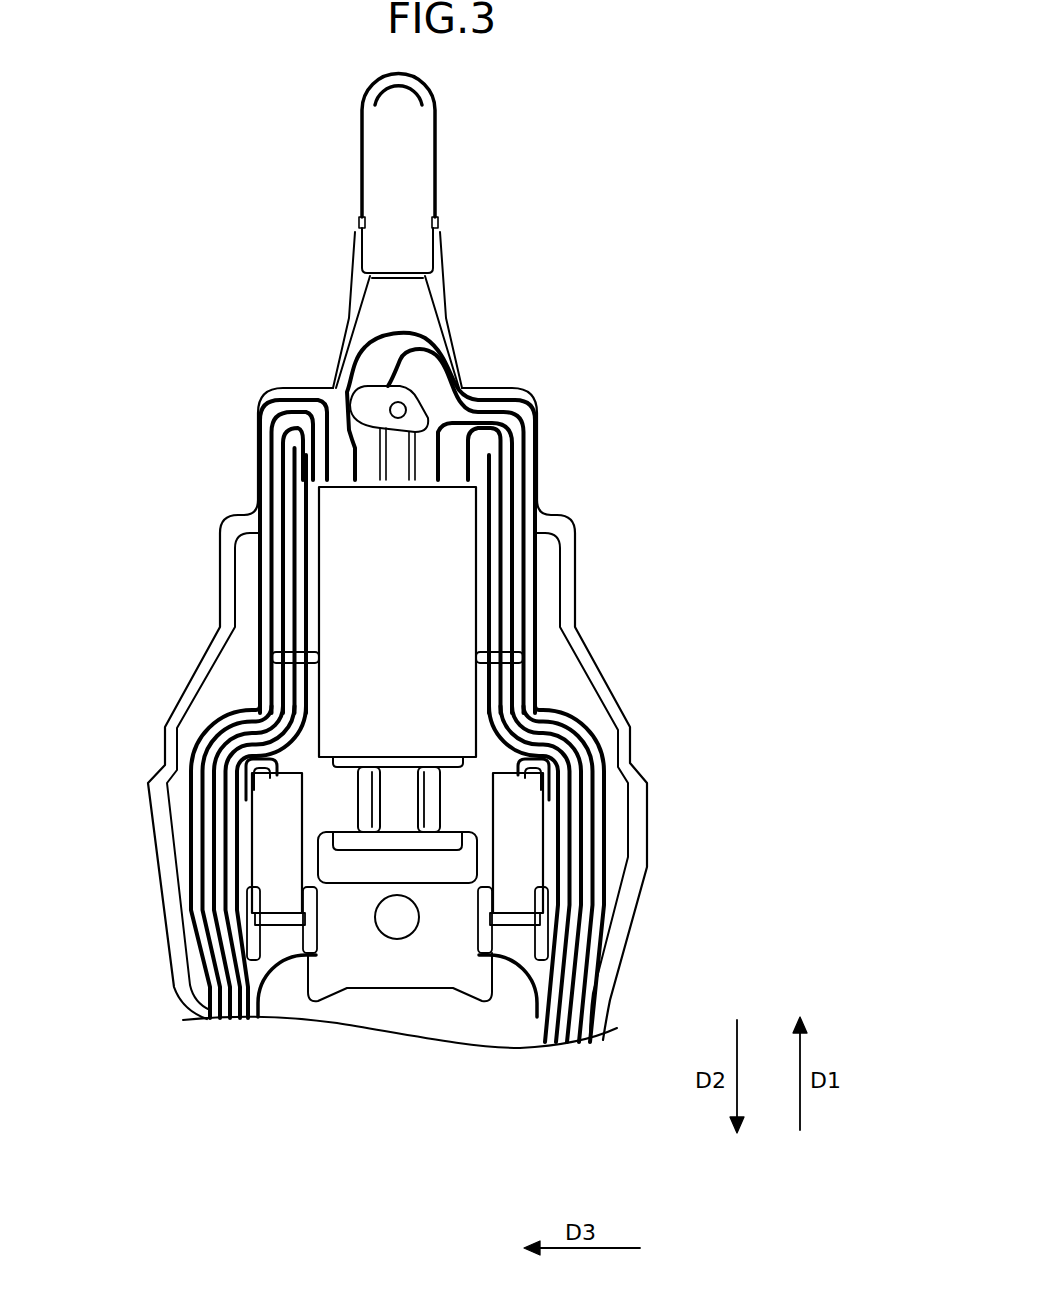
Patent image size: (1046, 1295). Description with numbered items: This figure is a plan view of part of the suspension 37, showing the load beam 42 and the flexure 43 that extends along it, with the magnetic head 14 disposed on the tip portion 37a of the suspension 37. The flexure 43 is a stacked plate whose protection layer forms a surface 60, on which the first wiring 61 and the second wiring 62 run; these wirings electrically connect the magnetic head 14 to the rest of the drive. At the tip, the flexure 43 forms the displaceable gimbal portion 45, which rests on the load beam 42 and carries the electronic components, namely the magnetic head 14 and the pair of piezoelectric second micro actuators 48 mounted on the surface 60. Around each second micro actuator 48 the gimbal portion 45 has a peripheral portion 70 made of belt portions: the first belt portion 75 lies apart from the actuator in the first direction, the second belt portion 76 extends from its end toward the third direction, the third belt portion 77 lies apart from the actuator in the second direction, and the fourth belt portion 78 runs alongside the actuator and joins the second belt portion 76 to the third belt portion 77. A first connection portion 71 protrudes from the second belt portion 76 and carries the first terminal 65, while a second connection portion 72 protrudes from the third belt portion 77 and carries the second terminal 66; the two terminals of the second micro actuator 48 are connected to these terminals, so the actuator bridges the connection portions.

The suspension 37 is at (182, 250).
The tip portion 37a is at (437, 125).
The load beam 42 is at (413, 193).
The surface 60 is at (412, 318).
The flexure 43 is at (527, 417).
The magnetic head 14 is at (425, 543).
The gimbal portion 45 is at (577, 707).
The first belt portion 75 is at (263, 672).
The first wiring 61 is at (263, 697).
The first terminal 65 is at (273, 717).
The second wiring 62 is at (280, 740).
The second belt portion 76 is at (213, 726).
The fourth belt portion 78 is at (193, 780).
The first connection portion 71 is at (242, 793).
The second micro actuator 48 is at (268, 848).
The peripheral portion 70 is at (185, 882).
The third belt portion 77 is at (212, 999).
The second terminal 66 is at (312, 927).
The second connection portion 72 is at (312, 950).